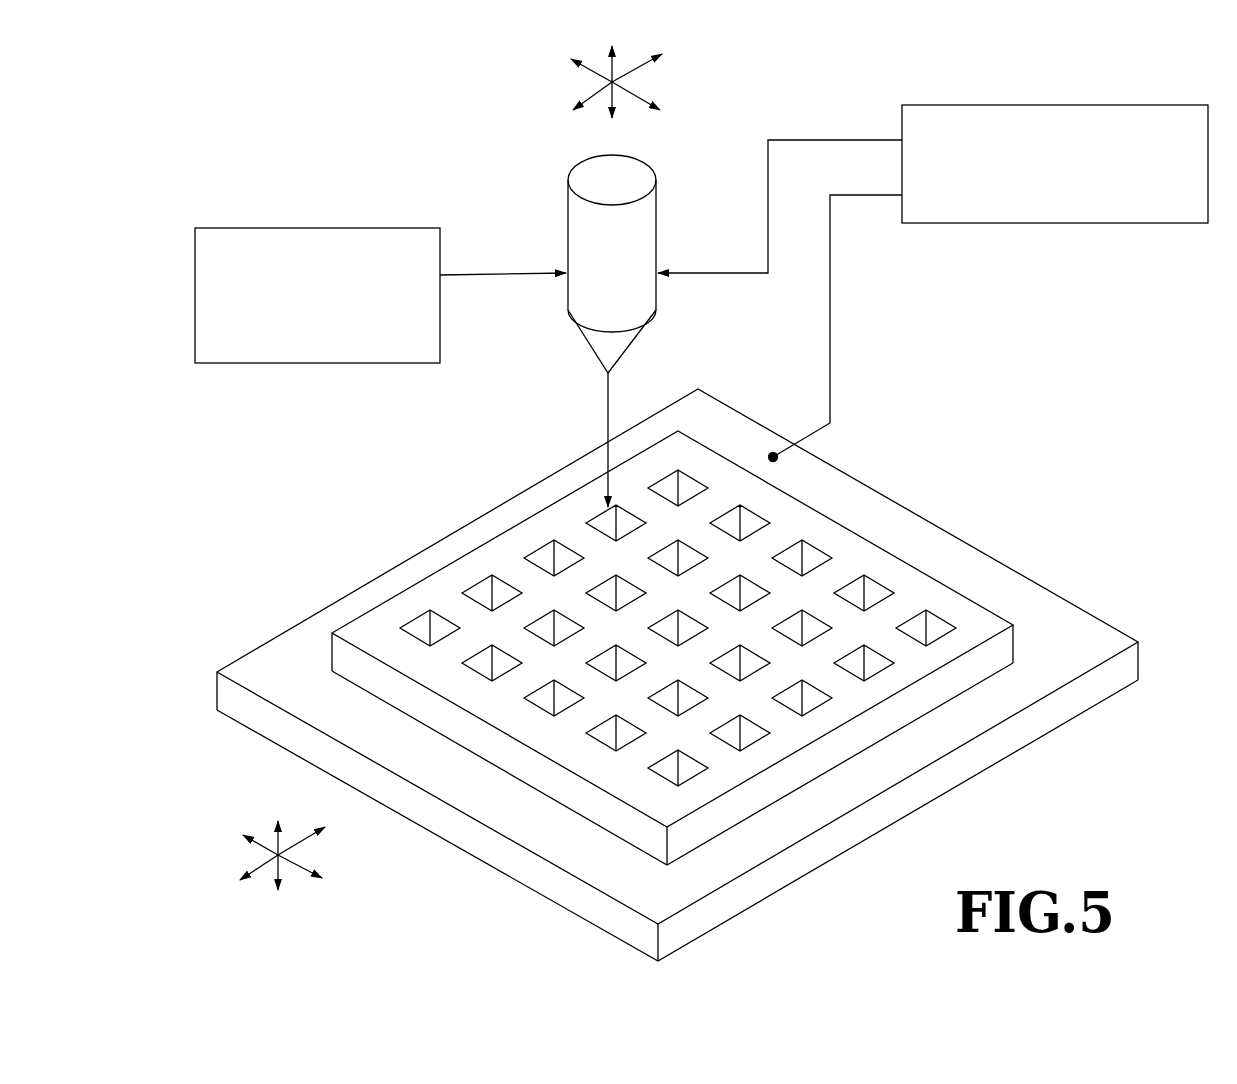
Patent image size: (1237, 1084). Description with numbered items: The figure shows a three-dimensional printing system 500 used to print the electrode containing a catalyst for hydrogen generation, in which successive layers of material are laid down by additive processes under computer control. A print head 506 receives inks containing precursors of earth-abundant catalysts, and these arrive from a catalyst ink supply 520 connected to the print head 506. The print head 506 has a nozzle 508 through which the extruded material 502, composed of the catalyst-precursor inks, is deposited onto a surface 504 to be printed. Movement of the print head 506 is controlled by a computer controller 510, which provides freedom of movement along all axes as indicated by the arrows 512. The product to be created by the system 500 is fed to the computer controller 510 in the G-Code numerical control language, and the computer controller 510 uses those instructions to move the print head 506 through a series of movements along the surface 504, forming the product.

The 3D printing system 500 is at (1008, 74).
The extruded material 502 is at (600, 411).
The surface 504 is at (990, 555).
The print head 506 is at (570, 171).
The nozzle 508 is at (615, 368).
The computer controller 510 is at (1118, 224).
The arrows 512 is at (637, 92).
The catalyst ink supply 520 is at (325, 225).